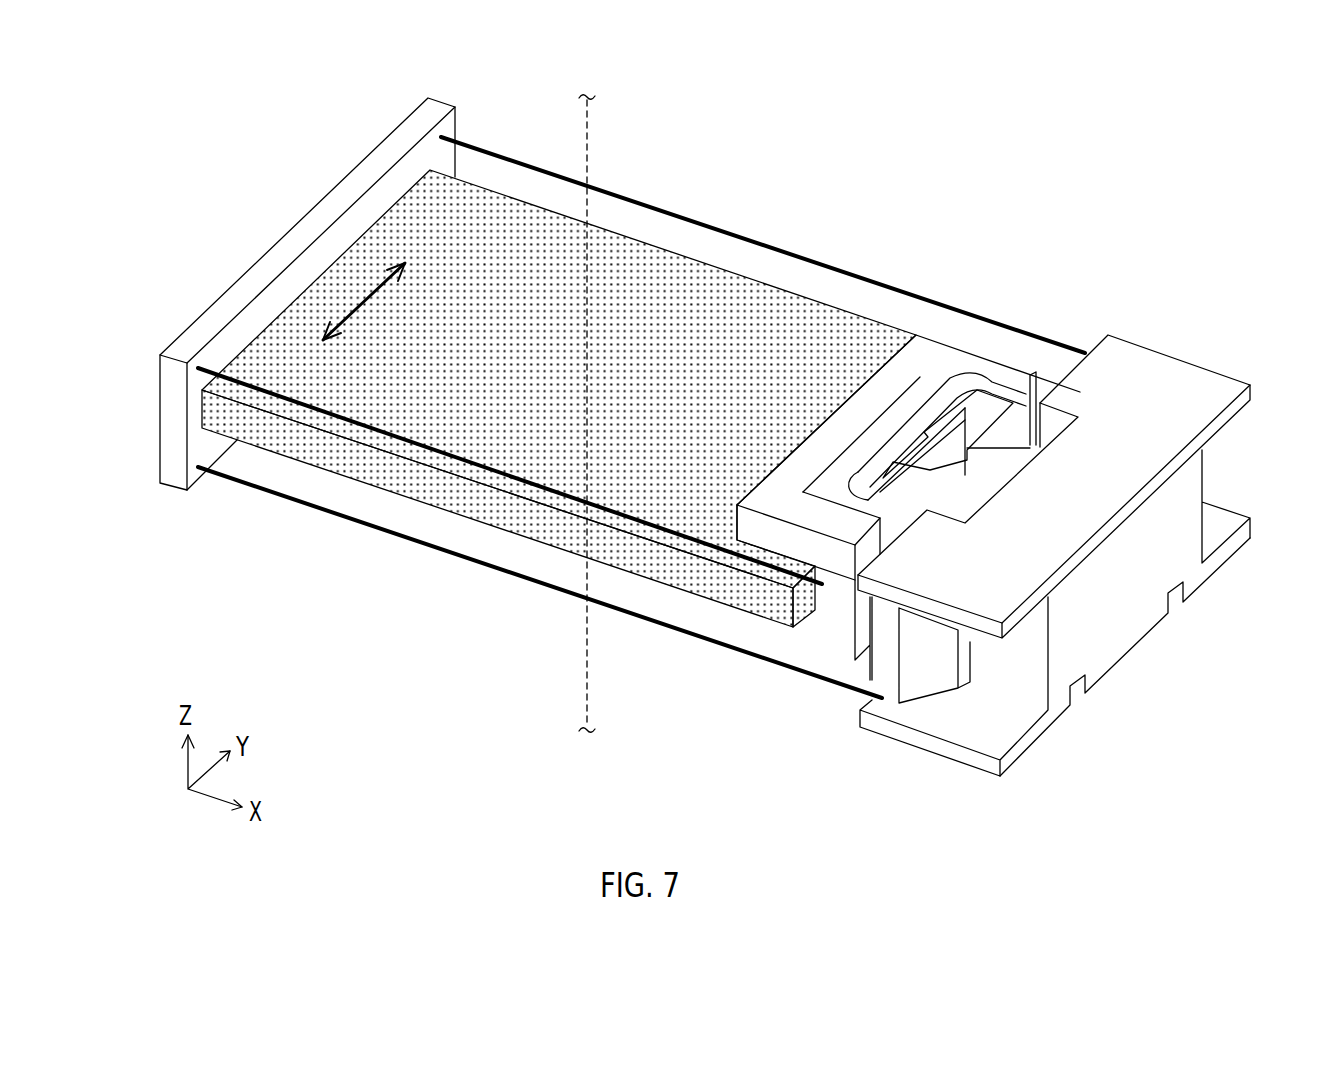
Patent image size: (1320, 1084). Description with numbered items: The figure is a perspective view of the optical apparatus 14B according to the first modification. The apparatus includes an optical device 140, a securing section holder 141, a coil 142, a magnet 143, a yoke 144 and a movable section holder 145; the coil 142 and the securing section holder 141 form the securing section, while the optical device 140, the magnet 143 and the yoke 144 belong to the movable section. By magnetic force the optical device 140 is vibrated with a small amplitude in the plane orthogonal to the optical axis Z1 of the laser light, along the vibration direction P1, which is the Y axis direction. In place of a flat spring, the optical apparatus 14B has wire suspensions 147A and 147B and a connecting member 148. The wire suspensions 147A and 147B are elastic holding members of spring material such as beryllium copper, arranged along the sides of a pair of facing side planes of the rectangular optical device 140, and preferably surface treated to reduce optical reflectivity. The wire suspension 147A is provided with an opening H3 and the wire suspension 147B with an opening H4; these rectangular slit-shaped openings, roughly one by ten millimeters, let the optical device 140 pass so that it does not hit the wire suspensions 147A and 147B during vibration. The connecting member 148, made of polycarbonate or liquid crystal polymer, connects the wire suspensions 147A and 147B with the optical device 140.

The optical apparatus 14B is at (1003, 114).
The optical device 140 is at (510, 455).
The securing section holder 141 is at (1127, 640).
The coil 142 is at (1040, 410).
The magnet 143 is at (983, 490).
The yoke 144 is at (928, 413).
The movable section holder 145 is at (883, 393).
The wire suspension 147A is at (357, 422).
The wire suspension 147B is at (500, 156).
The connecting member 148 is at (220, 313).
The vibration direction P1 is at (380, 282).
The optical axis Z1 is at (589, 146).
The opening H3 is at (819, 622).
The opening H4 is at (678, 242).